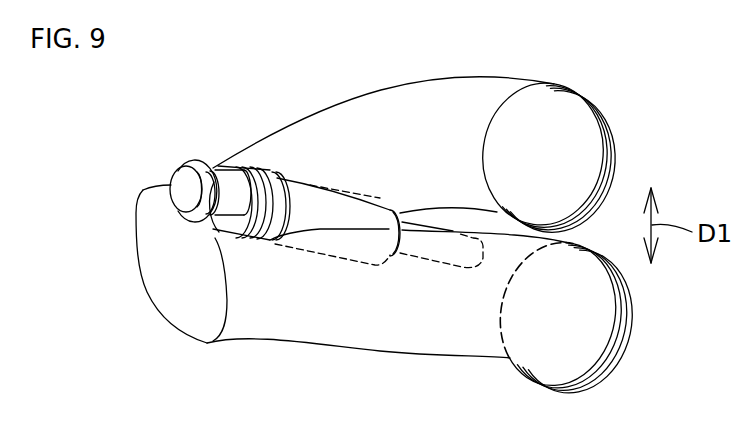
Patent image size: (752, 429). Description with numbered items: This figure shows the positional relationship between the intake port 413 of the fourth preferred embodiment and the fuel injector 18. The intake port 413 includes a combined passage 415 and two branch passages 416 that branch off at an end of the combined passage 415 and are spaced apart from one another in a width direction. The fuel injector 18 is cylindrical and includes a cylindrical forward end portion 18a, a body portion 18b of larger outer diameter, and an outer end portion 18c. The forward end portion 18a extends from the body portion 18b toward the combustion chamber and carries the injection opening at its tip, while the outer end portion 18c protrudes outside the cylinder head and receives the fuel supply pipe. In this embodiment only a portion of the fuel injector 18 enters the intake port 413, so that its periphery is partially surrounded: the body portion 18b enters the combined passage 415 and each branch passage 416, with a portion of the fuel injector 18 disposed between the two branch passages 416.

The fuel injector 18 is at (310, 222).
The forward end portion 18a is at (427, 268).
The body portion 18b is at (309, 252).
The outer end portion 18c is at (257, 221).
The intake port 413 is at (137, 223).
The combined passage 415 is at (265, 160).
The branch passages 416 is at (443, 93).